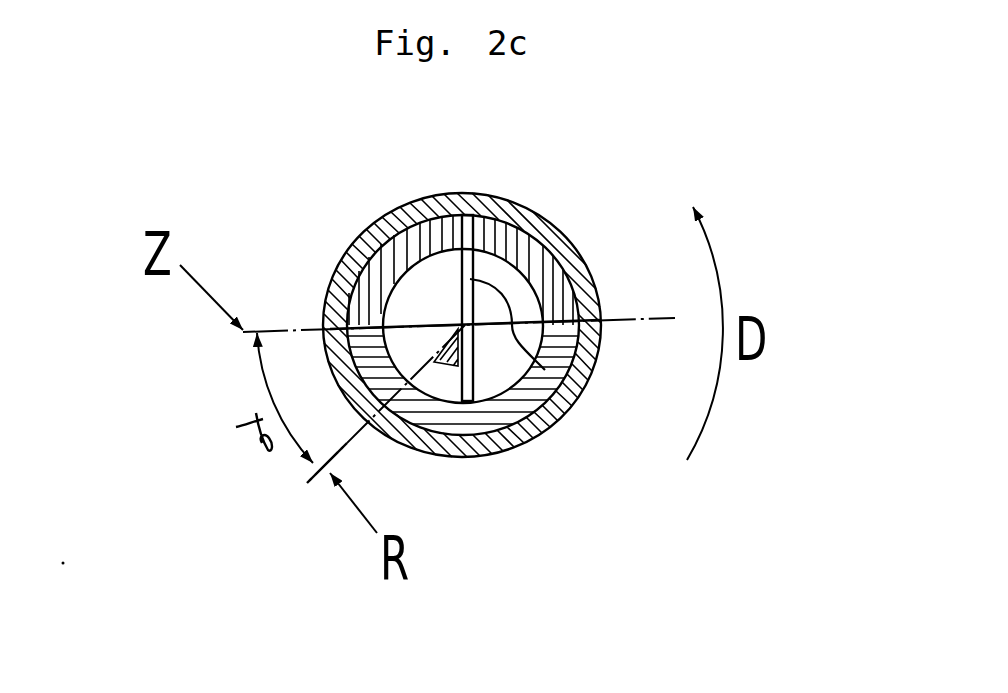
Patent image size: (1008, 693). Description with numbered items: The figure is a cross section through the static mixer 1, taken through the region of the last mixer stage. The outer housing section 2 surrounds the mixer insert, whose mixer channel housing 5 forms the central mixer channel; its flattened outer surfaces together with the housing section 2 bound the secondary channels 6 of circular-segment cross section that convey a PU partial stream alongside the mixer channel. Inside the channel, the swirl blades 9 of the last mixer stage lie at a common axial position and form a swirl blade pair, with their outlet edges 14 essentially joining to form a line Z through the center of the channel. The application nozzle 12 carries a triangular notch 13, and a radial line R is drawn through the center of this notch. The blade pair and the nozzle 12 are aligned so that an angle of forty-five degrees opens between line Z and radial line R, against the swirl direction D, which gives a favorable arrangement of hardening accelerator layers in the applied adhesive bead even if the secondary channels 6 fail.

The static mixer 1 is at (597, 213).
The housing section 2 is at (472, 197).
The mixer channel housing 5 is at (573, 380).
The secondary channels 6 is at (524, 238).
The swirl blades 9 is at (407, 316).
The application nozzle 12 is at (452, 388).
The triangular notch 13 is at (448, 352).
The outlet edges 14 is at (418, 318).